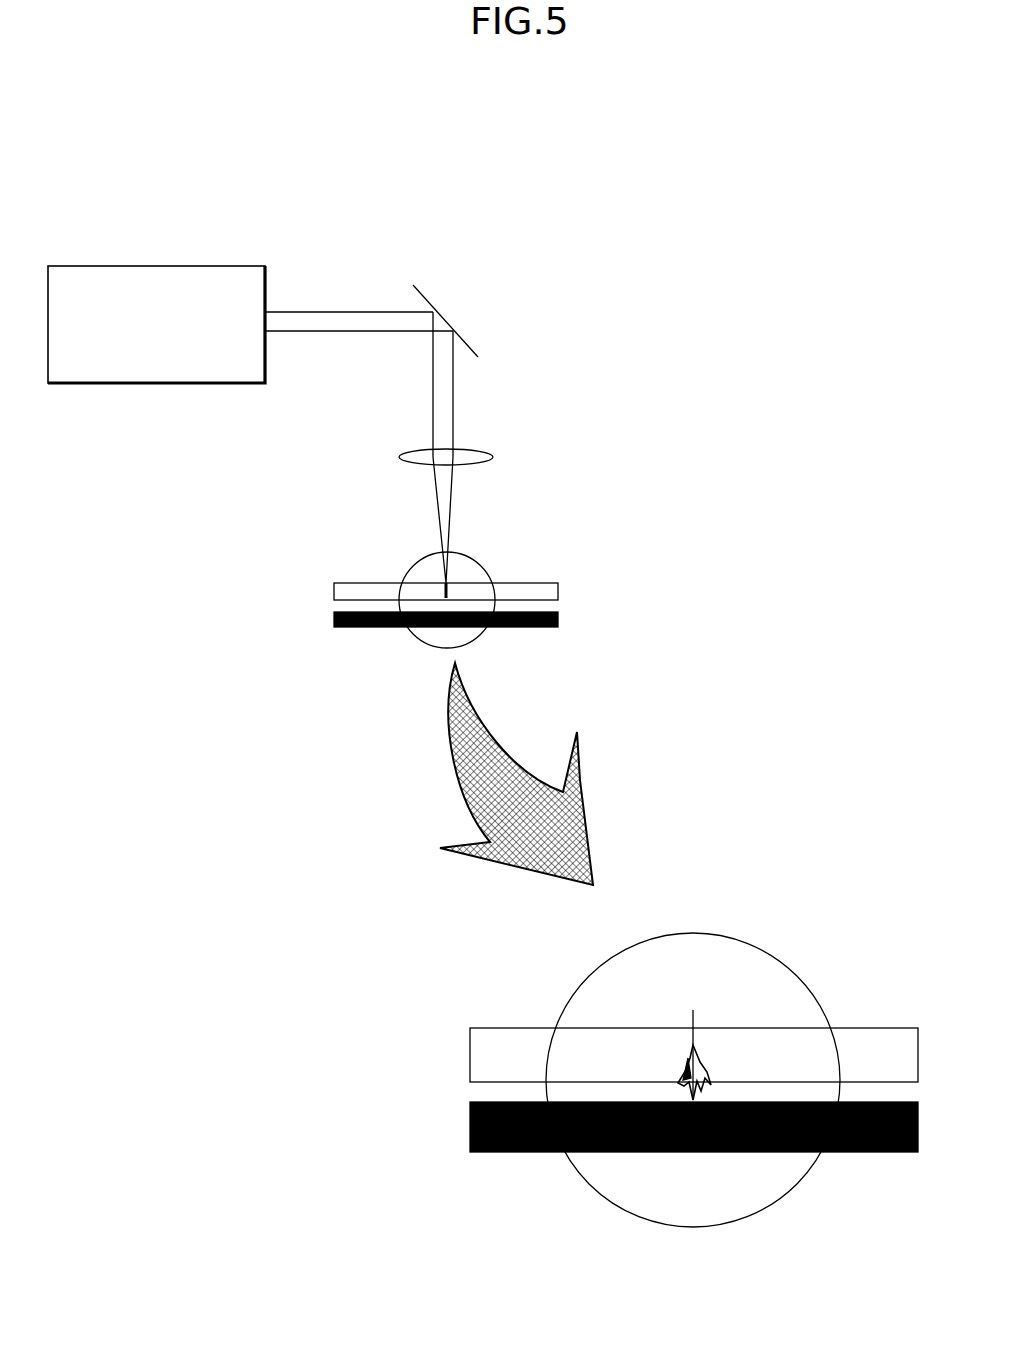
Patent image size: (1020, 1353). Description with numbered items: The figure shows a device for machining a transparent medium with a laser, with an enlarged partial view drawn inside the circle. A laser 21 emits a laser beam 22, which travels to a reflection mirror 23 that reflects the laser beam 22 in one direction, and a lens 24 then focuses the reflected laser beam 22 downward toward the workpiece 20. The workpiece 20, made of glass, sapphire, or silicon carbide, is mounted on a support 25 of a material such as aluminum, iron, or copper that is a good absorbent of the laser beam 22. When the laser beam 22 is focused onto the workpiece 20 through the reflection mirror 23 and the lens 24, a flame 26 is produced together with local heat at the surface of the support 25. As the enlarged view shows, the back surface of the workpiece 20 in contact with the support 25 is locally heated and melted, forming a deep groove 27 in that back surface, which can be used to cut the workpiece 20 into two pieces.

The workpiece 20 is at (532, 583).
The laser 21 is at (162, 383).
The laser beam 22 is at (357, 310).
The reflection mirror 23 is at (445, 316).
The lens 24 is at (480, 449).
The support 25 is at (334, 615).
The flame 26 is at (444, 583).
The groove 27 is at (702, 1047).